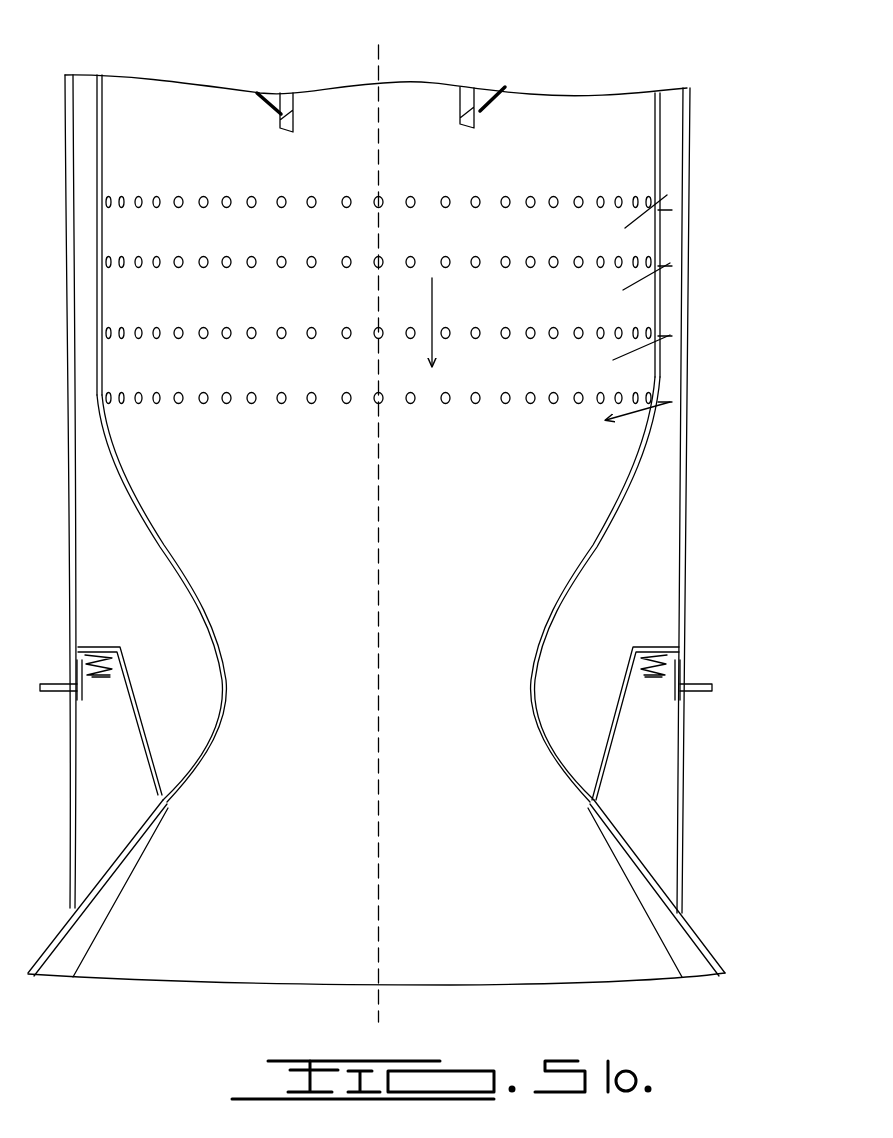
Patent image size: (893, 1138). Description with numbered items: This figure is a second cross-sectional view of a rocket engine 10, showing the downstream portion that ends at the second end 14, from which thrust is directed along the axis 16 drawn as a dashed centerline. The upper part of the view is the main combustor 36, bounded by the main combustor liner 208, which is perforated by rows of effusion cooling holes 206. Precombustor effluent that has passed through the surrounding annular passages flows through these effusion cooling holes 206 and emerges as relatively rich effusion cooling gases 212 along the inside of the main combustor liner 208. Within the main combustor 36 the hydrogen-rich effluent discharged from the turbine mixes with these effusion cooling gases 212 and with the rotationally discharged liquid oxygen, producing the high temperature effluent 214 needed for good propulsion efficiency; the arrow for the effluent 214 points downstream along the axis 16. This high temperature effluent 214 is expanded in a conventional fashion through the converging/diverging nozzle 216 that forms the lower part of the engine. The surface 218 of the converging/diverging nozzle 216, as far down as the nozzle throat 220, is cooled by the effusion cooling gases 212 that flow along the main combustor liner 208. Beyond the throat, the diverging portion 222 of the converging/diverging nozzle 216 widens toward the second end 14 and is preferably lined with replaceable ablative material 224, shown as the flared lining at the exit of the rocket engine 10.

The rocket engine 10 is at (735, 107).
The second end 14 is at (745, 975).
The axis 16 is at (376, 1003).
The main combustor 36 is at (245, 308).
The effusion cooling holes 206 is at (389, 307).
The main combustor liner 208 is at (657, 368).
The effusion cooling gases 212 is at (628, 414).
The high temperature effluent 214 is at (433, 296).
The converging/diverging nozzle 216 is at (378, 589).
The surface 218 is at (557, 605).
The nozzle throat 220 is at (512, 679).
The diverging portion 222 is at (538, 869).
The replaceable ablative material 224 is at (665, 921).